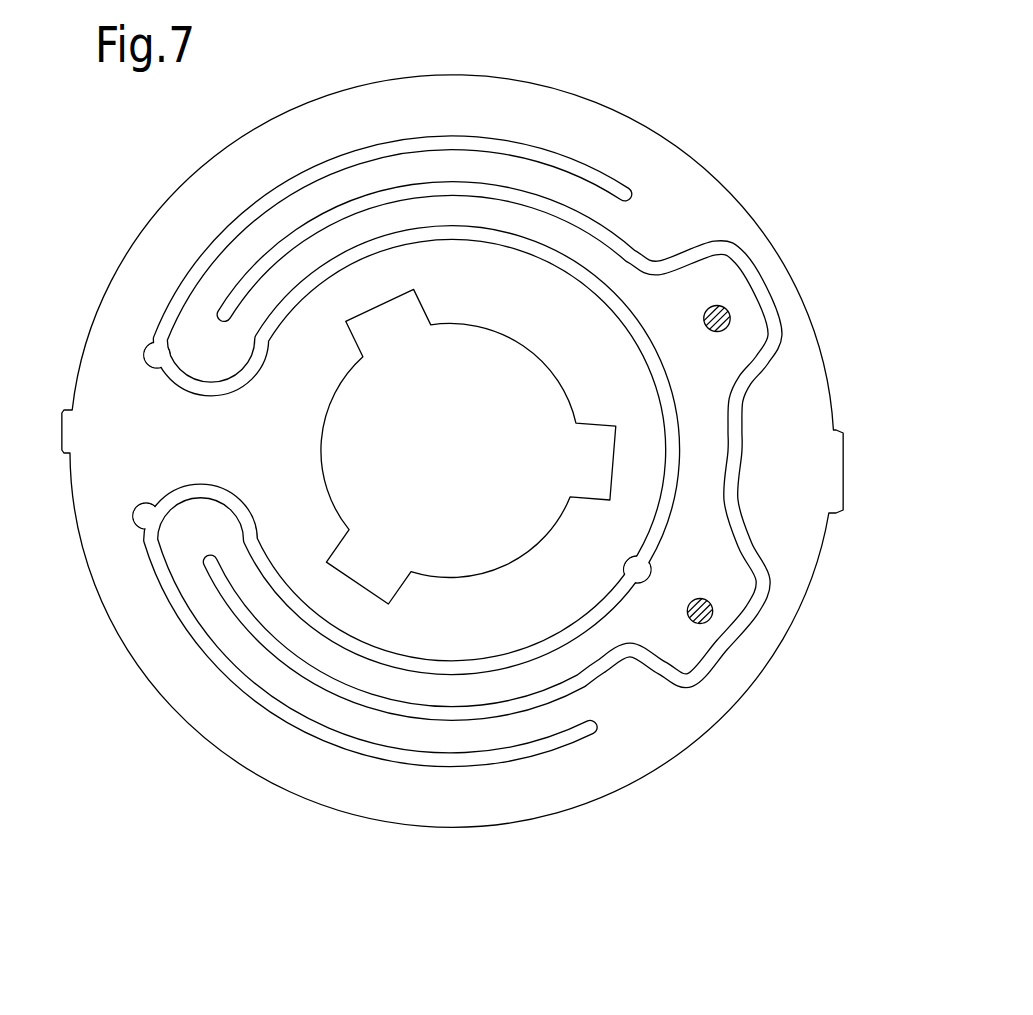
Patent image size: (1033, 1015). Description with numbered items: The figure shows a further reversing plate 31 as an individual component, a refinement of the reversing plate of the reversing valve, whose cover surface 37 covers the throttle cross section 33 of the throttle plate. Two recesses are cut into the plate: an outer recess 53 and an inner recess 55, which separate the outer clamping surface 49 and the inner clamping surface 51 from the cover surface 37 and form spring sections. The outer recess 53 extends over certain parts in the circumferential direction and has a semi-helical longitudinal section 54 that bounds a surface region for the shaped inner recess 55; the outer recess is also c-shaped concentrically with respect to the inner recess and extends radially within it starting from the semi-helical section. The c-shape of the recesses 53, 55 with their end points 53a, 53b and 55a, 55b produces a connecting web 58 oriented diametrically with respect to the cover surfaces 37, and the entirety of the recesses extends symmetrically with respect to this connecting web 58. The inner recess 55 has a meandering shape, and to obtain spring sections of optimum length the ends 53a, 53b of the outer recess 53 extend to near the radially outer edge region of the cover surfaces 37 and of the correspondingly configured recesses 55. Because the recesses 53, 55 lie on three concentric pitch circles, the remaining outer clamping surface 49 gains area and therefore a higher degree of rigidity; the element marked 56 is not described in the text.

The reversing plate 31 is at (460, 493).
The throttle cross section 33 is at (707, 633).
The cover surface 37 is at (747, 347).
The outer clamping surface 49 is at (697, 203).
The inner clamping surface 51 is at (445, 464).
The outer recess 53 is at (677, 463).
The end point of outer recess 53a is at (597, 727).
The end point of outer recess 53b is at (637, 178).
The semi-helical longitudinal section 54 is at (415, 697).
The inner recess 55 is at (730, 497).
The end point of inner recess 55a is at (203, 563).
The end point of inner recess 55b is at (220, 317).
The bridge 56 is at (212, 398).
The connecting web 58 is at (445, 446).